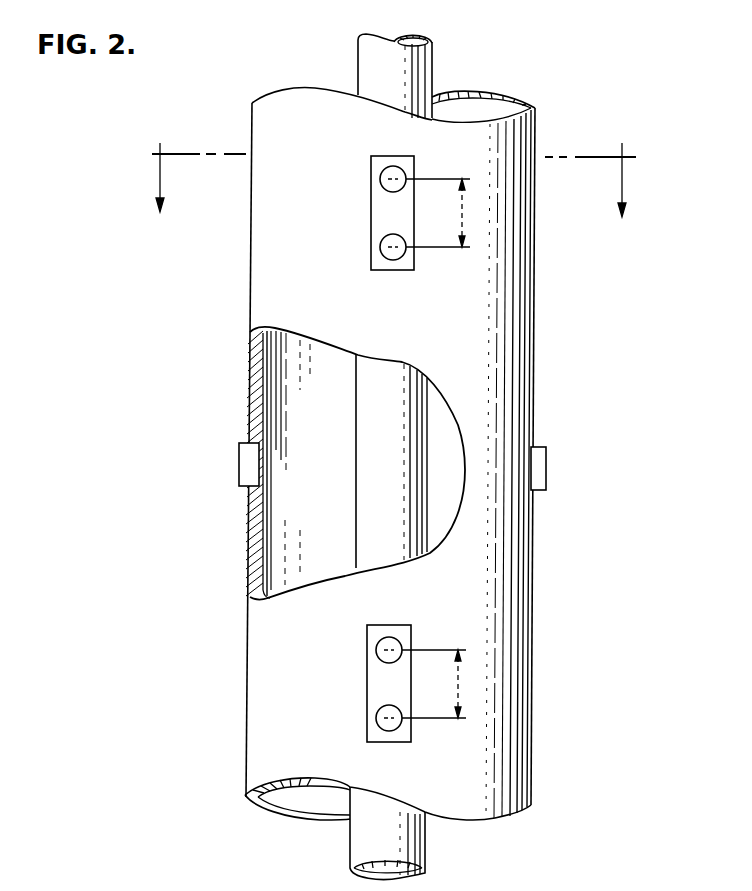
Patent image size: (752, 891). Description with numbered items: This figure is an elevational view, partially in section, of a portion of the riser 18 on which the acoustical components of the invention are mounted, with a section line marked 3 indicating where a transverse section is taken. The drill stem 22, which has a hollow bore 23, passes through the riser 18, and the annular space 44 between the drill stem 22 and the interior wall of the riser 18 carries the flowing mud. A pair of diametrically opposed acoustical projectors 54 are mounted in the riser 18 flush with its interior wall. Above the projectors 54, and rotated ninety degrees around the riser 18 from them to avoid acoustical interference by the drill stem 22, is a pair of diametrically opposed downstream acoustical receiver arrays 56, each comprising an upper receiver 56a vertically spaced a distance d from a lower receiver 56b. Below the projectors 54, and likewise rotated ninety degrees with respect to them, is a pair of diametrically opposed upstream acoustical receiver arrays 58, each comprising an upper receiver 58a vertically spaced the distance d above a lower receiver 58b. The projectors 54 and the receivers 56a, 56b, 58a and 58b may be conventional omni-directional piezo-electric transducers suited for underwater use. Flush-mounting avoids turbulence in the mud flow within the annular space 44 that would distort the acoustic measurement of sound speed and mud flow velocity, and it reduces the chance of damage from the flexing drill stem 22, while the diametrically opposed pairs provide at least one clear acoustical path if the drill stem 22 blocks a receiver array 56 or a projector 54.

The section line 3- 3 is at (393, 180).
The riser 18 is at (250, 375).
The drill stem 22 is at (398, 471).
The hollow bore 23 is at (406, 34).
The annular space 44 is at (290, 510).
The acoustical projectors 54 is at (238, 452).
The downstream acoustical receiver arrays 56 is at (371, 203).
The upper receiver 56a is at (381, 173).
The lower receiver 56b is at (381, 247).
The upstream acoustical receiver arrays 58 is at (367, 673).
The upper receiver 58a is at (377, 644).
The lower receiver 58b is at (377, 712).